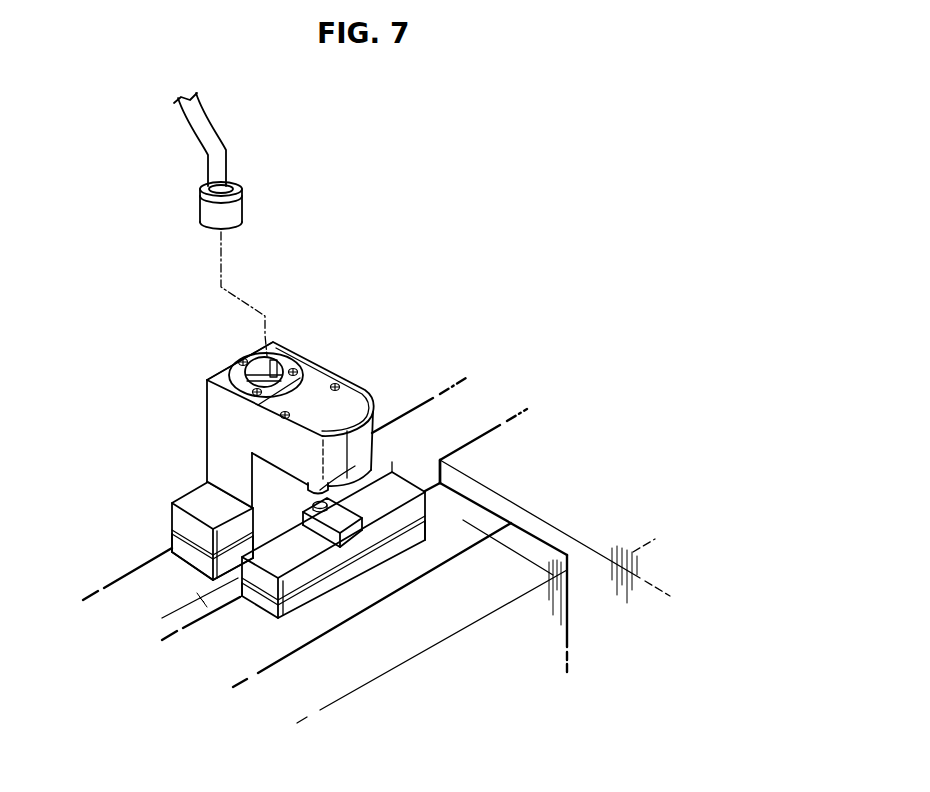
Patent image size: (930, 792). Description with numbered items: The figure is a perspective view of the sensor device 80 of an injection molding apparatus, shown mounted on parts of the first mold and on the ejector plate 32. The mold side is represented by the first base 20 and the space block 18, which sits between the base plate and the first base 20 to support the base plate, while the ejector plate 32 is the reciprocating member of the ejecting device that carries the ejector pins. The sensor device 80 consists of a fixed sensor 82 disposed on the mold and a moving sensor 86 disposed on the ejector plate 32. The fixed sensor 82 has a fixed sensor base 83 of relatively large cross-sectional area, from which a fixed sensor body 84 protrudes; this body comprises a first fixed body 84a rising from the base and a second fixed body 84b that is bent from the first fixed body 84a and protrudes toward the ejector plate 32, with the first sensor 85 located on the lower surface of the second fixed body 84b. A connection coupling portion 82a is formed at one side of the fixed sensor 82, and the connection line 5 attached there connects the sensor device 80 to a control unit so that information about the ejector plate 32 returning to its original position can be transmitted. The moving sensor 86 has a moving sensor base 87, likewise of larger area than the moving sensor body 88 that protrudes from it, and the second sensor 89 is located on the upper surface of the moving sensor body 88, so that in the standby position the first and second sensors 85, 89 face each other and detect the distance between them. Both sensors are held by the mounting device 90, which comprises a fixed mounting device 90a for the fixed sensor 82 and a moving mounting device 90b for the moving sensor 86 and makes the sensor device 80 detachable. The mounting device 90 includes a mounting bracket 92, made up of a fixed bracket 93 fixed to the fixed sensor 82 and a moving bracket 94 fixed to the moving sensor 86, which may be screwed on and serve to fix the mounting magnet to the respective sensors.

The connection line 5 is at (208, 160).
The space block 18 is at (562, 517).
The first base 20 is at (430, 411).
The ejector plate 32 is at (477, 602).
The sensor device 80 is at (341, 326).
The fixed sensor 82 is at (200, 397).
The connection coupling portion 82a is at (278, 354).
The fixed sensor base 83 is at (192, 503).
The fixed sensor body 84 is at (191, 425).
The first fixed body 84a is at (240, 428).
The second fixed body 84b is at (280, 442).
The first sensor 85 is at (347, 428).
The moving sensor 86 is at (438, 492).
The moving sensor base 87 is at (322, 567).
The moving sensor body 88 is at (348, 525).
The second sensor 89 is at (384, 477).
The mounting device 90 is at (236, 591).
The fixed mounting device 90a is at (172, 562).
The moving mounting device 90b is at (302, 604).
The mounting bracket 92 is at (248, 603).
The fixed bracket 93 is at (173, 543).
The moving bracket 94 is at (258, 608).